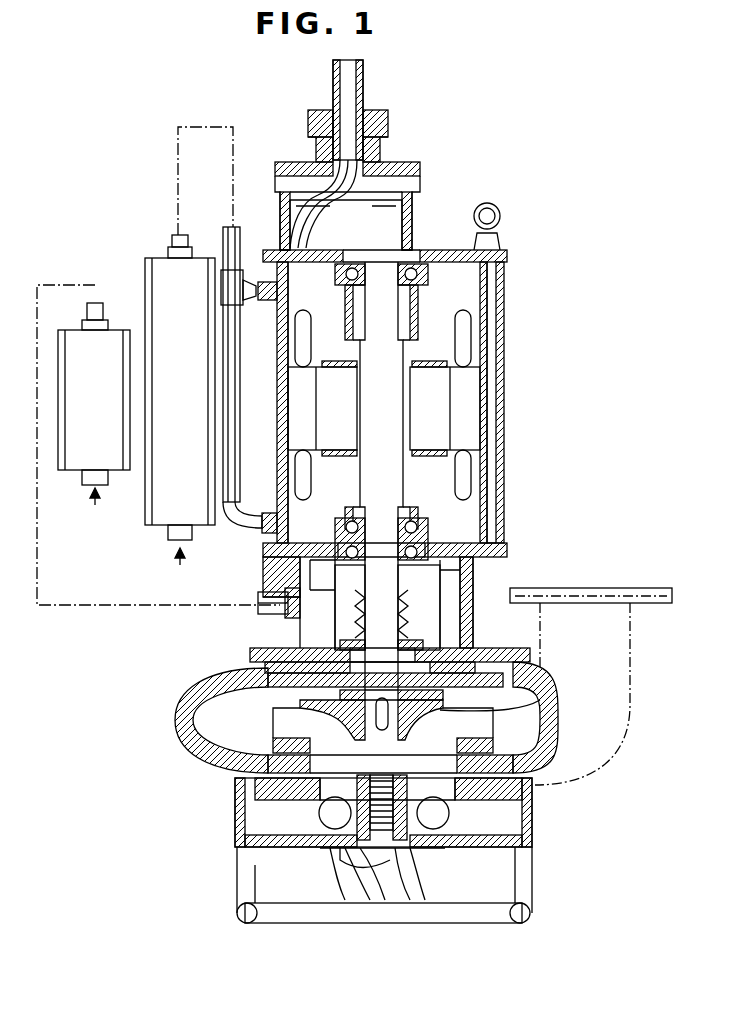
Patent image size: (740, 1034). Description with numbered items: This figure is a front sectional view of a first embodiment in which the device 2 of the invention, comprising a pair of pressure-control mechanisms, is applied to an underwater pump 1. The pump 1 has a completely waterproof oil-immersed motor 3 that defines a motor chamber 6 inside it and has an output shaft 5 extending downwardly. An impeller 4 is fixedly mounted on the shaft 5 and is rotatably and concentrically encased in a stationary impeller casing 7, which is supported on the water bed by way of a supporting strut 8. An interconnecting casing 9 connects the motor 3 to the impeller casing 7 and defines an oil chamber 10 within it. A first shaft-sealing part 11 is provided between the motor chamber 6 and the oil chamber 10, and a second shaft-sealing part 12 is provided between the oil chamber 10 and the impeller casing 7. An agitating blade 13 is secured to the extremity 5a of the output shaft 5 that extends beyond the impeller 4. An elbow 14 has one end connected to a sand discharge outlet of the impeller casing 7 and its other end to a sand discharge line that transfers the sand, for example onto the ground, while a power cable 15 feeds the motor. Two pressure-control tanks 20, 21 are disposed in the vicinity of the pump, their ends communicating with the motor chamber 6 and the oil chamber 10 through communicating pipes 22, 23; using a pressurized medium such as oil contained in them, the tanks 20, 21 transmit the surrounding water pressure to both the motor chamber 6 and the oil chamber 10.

The underwater pump 1 is at (534, 456).
The device 2 is at (94, 402).
The oil-immersed motor 3 is at (470, 406).
The impeller 4 is at (540, 706).
The output shaft 5 is at (398, 382).
The extremity of the output shaft 5a is at (377, 812).
The motor chamber 6 is at (314, 531).
The impeller casing 7 is at (556, 740).
The supporting strut 8 is at (525, 866).
The interconnecting casing 9 is at (470, 598).
The oil chamber 10 is at (330, 620).
The first shaft-sealing part 11 is at (329, 588).
The second shaft-sealing part 12 is at (265, 666).
The agitating blade 13 is at (417, 892).
The elbow 14 is at (622, 603).
The power cable 15 is at (350, 78).
The pressure-control tank 20 is at (160, 264).
The pressure-control tank 21 is at (117, 337).
The communicating pipe 22 is at (89, 607).
The communicating pipe 23 is at (198, 125).